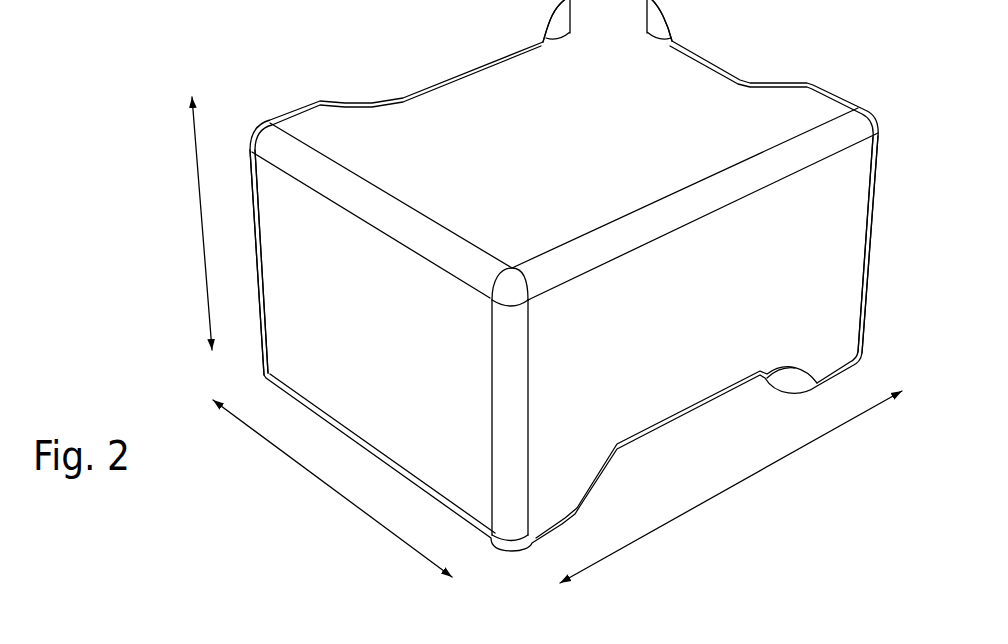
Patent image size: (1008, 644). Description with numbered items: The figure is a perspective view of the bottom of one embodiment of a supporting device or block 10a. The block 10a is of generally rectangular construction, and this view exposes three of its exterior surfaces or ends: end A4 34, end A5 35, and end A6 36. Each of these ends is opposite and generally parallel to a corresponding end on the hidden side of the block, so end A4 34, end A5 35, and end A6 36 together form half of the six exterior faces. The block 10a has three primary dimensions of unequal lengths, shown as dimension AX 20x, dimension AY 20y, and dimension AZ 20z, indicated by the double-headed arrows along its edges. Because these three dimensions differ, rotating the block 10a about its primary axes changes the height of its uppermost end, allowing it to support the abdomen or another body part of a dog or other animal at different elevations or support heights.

The supporting device or block 10a is at (559, 275).
The end A4 34 is at (672, 85).
The end A5 35 is at (838, 260).
The end A6 36 is at (302, 325).
The dimension AX 20x is at (731, 487).
The dimension AY 20y is at (332, 488).
The dimension AZ 20z is at (183, 223).